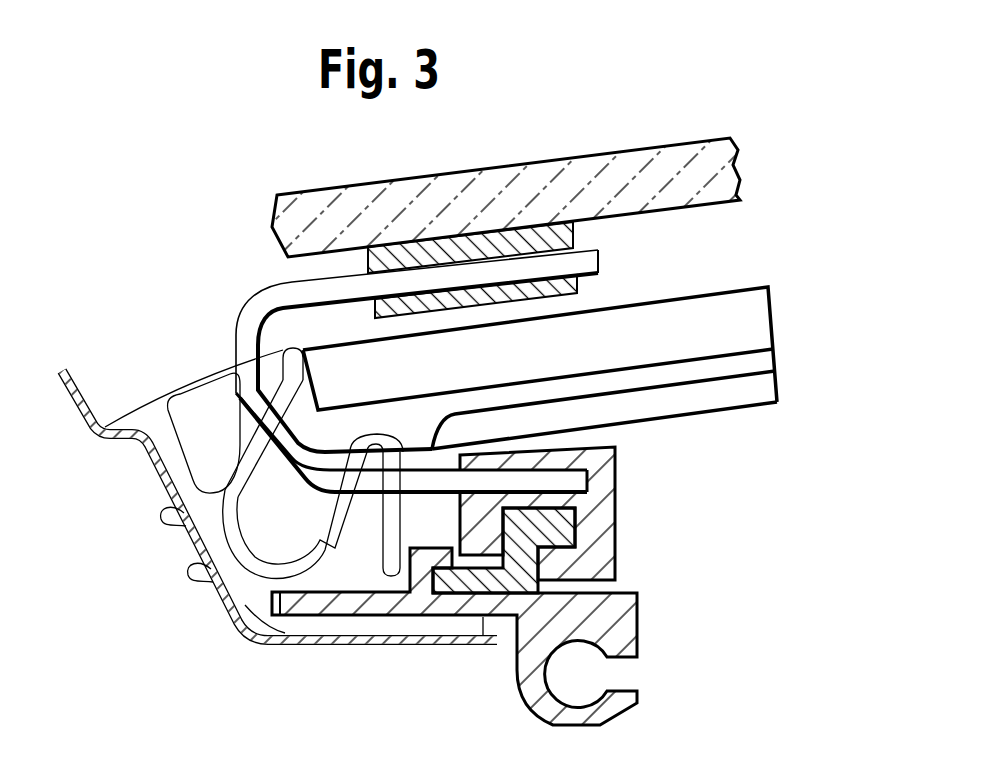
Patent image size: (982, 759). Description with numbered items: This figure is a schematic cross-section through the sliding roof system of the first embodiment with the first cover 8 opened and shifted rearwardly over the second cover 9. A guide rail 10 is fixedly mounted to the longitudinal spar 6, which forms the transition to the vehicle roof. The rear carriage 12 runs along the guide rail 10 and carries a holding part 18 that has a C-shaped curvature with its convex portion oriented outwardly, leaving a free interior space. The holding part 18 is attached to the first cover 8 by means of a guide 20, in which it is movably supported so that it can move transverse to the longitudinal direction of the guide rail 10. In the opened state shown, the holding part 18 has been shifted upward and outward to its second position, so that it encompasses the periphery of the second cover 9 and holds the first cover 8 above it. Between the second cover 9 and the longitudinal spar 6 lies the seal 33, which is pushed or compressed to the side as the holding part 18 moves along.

The longitudinal spar 6 is at (80, 390).
The seal 33 is at (202, 380).
The first cover 8 is at (663, 172).
The guide 20 is at (493, 238).
The carriage 12 is at (597, 507).
The guide rail 10 is at (466, 593).
The holding part 18 is at (243, 322).
The second cover 9 is at (750, 326).